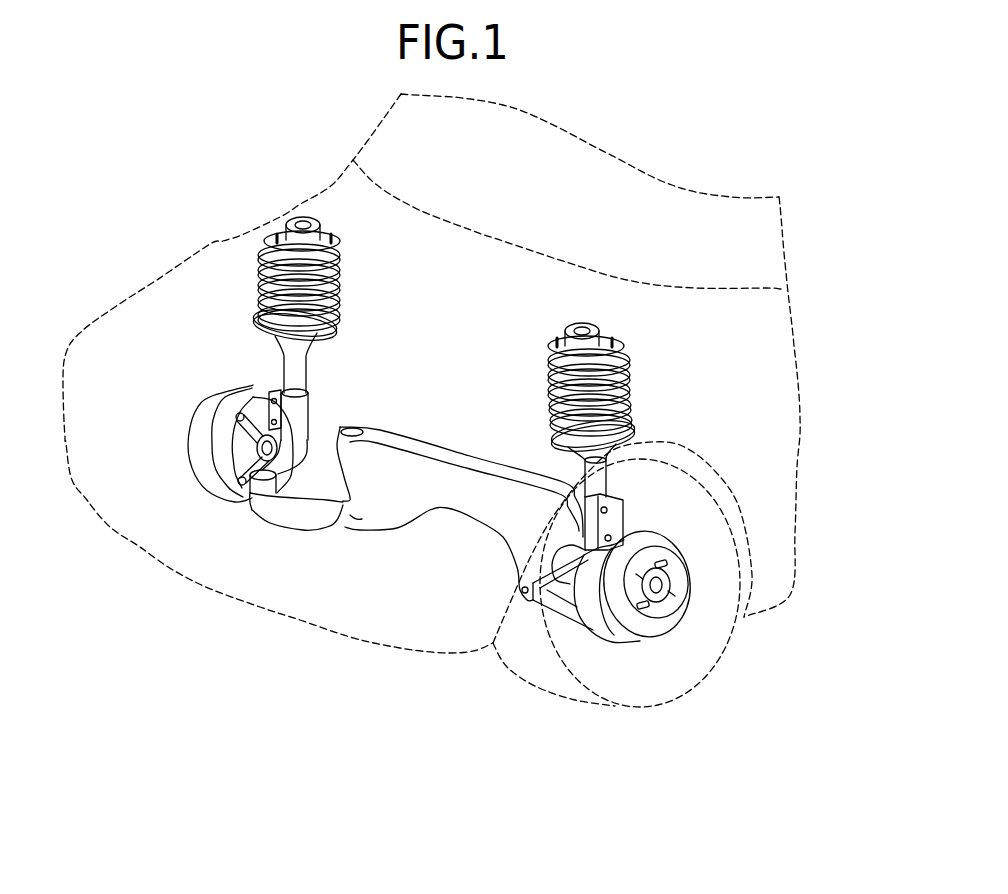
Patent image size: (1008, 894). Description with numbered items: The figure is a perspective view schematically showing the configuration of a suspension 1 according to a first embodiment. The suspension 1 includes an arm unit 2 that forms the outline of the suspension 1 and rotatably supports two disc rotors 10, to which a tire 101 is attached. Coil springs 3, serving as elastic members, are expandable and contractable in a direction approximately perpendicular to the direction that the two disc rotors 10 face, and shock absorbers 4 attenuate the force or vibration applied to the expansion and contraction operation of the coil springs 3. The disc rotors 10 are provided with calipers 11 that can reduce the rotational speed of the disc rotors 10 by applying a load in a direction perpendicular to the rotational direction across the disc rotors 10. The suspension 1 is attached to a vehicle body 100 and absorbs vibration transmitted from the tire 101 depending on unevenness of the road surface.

The suspension 1 is at (672, 340).
The arm unit 2 is at (382, 553).
The coil spring 3 is at (636, 389).
The shock absorber 4 is at (611, 472).
The disc rotor 10 is at (649, 617).
The caliper 11 is at (601, 617).
The vehicle body 100 is at (227, 241).
The tire 101 is at (710, 655).